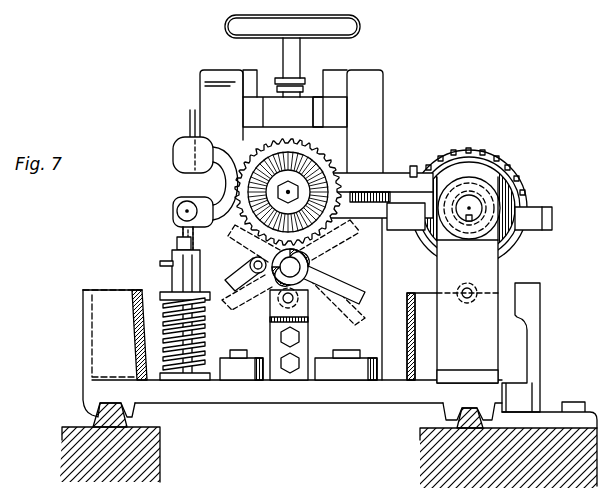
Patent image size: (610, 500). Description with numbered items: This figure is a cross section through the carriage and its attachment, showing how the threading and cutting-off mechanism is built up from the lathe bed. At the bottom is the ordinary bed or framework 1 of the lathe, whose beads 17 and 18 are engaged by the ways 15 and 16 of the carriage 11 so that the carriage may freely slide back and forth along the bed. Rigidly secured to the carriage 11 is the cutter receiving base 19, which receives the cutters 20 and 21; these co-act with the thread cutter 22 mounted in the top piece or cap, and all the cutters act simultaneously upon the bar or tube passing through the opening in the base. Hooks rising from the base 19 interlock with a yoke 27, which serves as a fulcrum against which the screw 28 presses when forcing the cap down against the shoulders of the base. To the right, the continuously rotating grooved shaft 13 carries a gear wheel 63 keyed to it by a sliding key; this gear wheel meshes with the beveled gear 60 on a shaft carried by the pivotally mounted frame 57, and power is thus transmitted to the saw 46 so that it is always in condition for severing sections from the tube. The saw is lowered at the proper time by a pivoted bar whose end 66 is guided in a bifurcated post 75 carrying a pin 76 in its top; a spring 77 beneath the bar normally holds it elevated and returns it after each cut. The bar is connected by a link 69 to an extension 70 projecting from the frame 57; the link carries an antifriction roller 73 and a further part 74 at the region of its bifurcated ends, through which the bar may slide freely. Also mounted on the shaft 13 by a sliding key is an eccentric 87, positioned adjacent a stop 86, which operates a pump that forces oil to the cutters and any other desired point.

The bed or framework of a lathe 1 is at (150, 462).
The carriage 11 is at (301, 402).
The shaft 13 is at (472, 204).
The way 15 is at (128, 408).
The way 16 is at (437, 407).
The bead 17 is at (96, 421).
The bead 18 is at (477, 423).
The cutter receiving base 19 is at (367, 298).
The cutter 20 is at (246, 283).
The cutter 21 is at (343, 305).
The thread cutter 22 is at (308, 262).
The yoke 27 is at (313, 225).
The screw 28 is at (302, 72).
The saw 46 is at (312, 155).
The pivotally mounted frame 57 is at (388, 177).
The beveled gear 60 is at (415, 165).
The gear wheel 63 is at (468, 150).
The end of bar 66 is at (183, 272).
The link 69 is at (180, 187).
The extension 70 is at (223, 153).
The antifriction roller 73 is at (177, 250).
The link rod 74 is at (205, 243).
The bifurcated post 75 is at (180, 283).
The pin 76 is at (167, 262).
The spring 77 is at (176, 311).
The stop 86 is at (467, 280).
The eccentric 87 is at (466, 206).